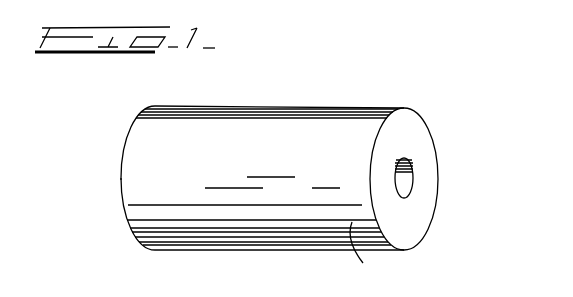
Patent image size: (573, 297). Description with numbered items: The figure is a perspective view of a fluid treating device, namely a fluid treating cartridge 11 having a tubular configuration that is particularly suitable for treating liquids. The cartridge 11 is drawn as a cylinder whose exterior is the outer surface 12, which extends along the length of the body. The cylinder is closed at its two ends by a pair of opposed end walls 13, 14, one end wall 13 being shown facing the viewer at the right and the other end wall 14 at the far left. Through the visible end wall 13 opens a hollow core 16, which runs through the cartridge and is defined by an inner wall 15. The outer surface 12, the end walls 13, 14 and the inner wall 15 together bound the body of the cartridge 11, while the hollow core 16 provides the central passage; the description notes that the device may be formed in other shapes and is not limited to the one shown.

The fluid treating cartridge 11 is at (288, 250).
The outer surface 12 is at (367, 252).
The end wall 13 is at (422, 205).
The end wall 14 is at (128, 220).
The inner wall 15 is at (410, 170).
The hollow core 16 is at (398, 180).